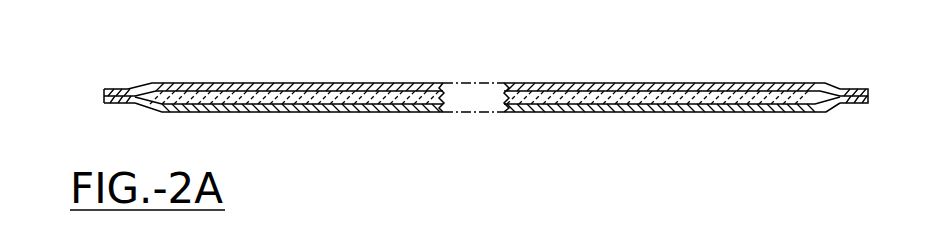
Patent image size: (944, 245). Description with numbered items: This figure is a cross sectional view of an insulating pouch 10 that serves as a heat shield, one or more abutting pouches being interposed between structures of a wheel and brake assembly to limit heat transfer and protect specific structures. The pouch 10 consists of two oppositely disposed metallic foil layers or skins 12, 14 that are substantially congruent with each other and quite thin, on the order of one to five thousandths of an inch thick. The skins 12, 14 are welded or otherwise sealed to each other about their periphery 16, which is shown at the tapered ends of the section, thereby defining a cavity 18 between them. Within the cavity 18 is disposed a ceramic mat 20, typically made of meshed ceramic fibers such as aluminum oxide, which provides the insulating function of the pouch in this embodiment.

The insulating pouch 10 is at (240, 62).
The metallic foil skin 12 is at (350, 83).
The metallic foil skin 14 is at (355, 112).
The periphery 16 is at (110, 103).
The cavity 18 is at (538, 100).
The ceramic mat 20 is at (291, 96).